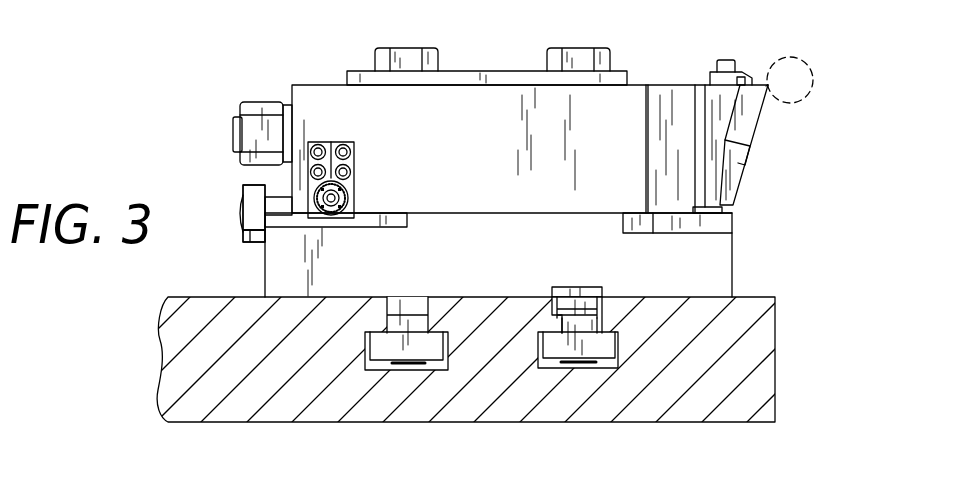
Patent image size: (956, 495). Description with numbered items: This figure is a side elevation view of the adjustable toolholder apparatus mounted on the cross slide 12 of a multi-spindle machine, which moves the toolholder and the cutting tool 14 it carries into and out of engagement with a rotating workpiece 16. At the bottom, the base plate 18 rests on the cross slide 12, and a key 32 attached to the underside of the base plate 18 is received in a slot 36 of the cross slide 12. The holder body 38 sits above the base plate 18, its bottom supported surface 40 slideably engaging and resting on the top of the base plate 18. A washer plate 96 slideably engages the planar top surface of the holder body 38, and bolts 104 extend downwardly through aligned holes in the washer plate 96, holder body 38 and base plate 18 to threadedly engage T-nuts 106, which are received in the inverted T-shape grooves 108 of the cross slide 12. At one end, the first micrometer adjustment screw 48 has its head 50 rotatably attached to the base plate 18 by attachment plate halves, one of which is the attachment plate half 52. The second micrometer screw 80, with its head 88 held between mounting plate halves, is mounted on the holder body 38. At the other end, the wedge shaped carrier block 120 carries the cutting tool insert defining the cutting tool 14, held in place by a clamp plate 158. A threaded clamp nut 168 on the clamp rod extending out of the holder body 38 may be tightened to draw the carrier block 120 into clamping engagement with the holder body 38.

The cross slide 12 is at (767, 325).
The cutting tool 14 is at (768, 82).
The rotating workpiece 16 is at (805, 62).
The base plate 18 is at (713, 260).
The key 32 is at (590, 295).
The slot 36 is at (573, 363).
The holder body 38 is at (495, 153).
The bottom supported surface 40 is at (568, 213).
The first micrometer adjustment screw 48 is at (243, 200).
The head 50 is at (229, 198).
The attachment plate half 52 is at (248, 238).
The second micrometer screw 80 is at (338, 208).
The head 88 is at (369, 222).
The washer plate 96 is at (463, 77).
The bolt 104 is at (573, 58).
The T-nut 106 is at (578, 350).
The inverted T-shape groove 108 is at (617, 360).
The wedge shaped carrier block 120 is at (722, 173).
The clamp plate 158 is at (733, 75).
The threaded clamp nut 168 is at (255, 108).